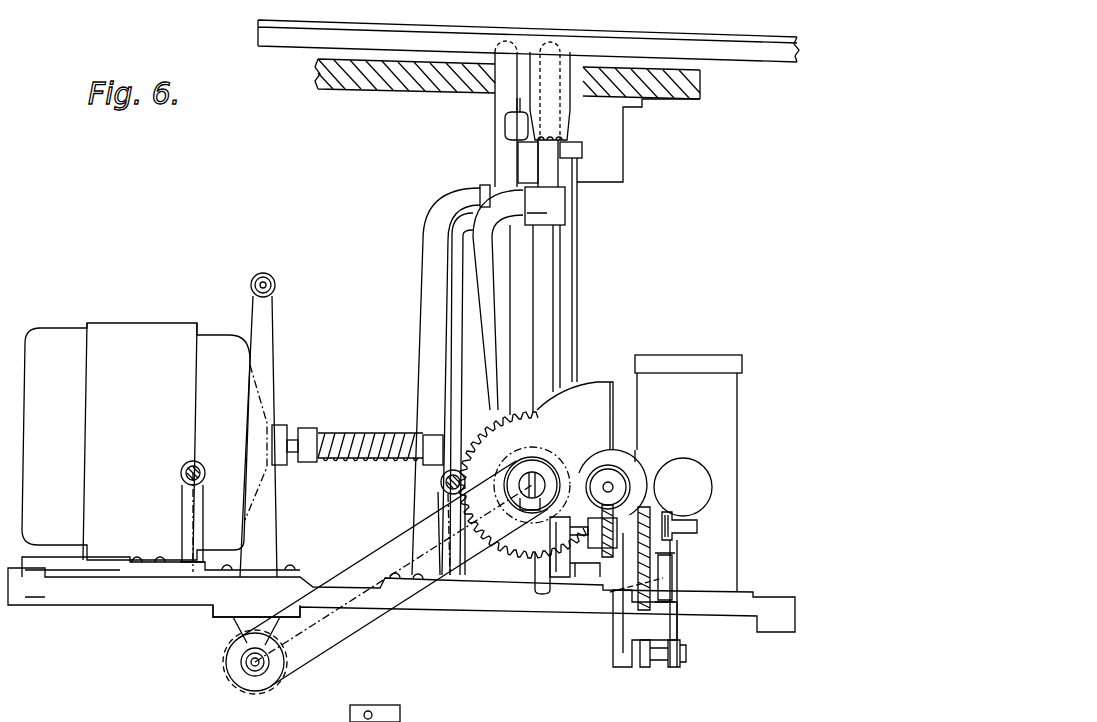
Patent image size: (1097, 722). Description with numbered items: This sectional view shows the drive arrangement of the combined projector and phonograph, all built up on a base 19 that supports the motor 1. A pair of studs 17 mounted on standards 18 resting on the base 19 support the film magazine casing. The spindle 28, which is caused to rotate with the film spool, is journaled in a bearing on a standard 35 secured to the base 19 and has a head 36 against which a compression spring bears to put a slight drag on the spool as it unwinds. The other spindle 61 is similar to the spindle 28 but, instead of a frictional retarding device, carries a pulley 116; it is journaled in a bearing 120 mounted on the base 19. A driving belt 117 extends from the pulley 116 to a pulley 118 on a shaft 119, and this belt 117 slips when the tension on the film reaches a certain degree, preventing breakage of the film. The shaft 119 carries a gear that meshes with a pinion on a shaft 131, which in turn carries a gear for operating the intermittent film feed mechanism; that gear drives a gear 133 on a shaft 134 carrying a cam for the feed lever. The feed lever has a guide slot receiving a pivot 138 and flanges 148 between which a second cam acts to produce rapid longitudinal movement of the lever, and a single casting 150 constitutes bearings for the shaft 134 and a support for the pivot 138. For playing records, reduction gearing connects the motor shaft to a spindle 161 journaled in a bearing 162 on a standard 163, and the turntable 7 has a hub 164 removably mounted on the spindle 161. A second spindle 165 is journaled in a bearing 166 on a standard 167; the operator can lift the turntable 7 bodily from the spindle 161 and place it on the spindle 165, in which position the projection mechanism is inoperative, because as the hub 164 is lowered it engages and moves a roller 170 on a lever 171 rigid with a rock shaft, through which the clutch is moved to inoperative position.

The motor 1 is at (136, 441).
The turntable 7 is at (760, 55).
The studs 17 is at (183, 473).
The standards 18 is at (186, 510).
The base 19 is at (150, 598).
The spindle 28 is at (277, 283).
The standard 35 is at (265, 351).
The head 36 is at (385, 712).
The spindle 61 is at (250, 670).
The pulley 116 is at (273, 652).
The driving belt 117 is at (380, 612).
The pulley 118 is at (528, 470).
The shaft 119 is at (540, 478).
The bearing 120 is at (242, 660).
The shaft 131 is at (610, 487).
The gear 133 is at (603, 552).
The shaft 134 is at (581, 535).
The pivot 138 is at (680, 654).
The flanges 148 is at (665, 560).
The casting 150 is at (628, 668).
The spindle 161 is at (556, 166).
The bearing 162 is at (560, 212).
The standard 163 is at (500, 317).
The hub 164 is at (565, 100).
The spindle 165 is at (500, 106).
The bearing 166 is at (487, 186).
The standard 167 is at (425, 265).
The roller 170 is at (510, 125).
The lever 171 is at (520, 141).